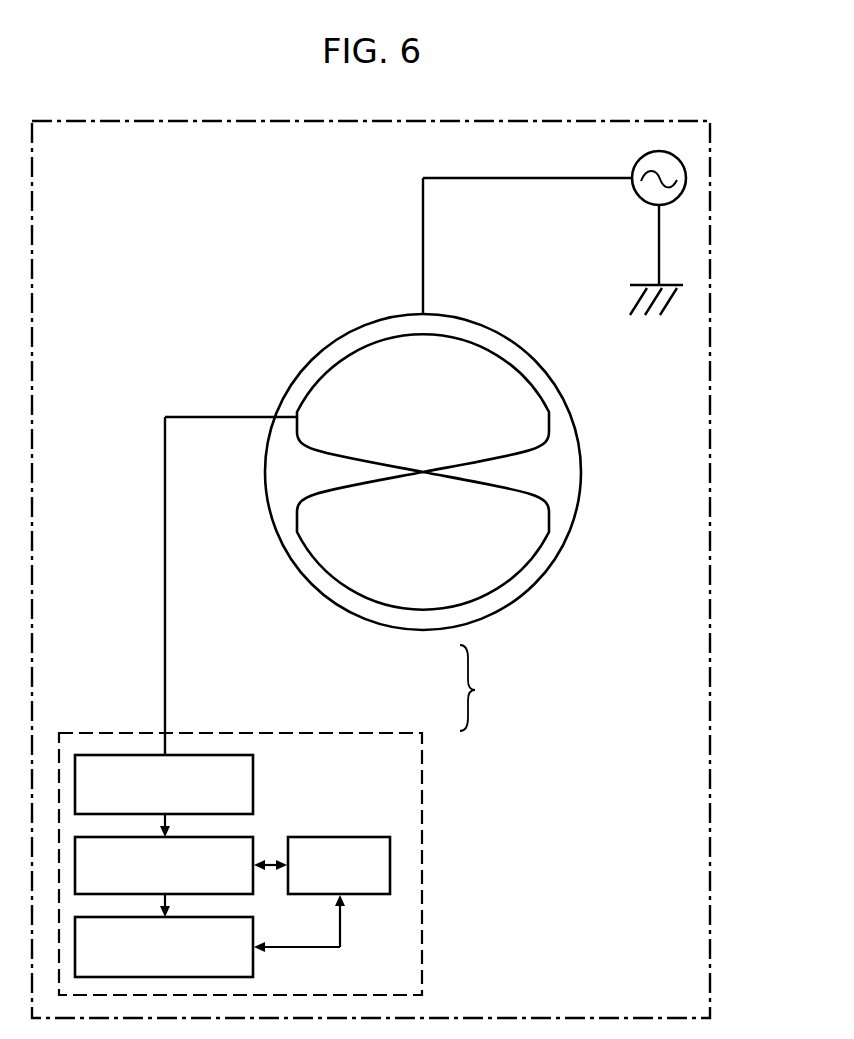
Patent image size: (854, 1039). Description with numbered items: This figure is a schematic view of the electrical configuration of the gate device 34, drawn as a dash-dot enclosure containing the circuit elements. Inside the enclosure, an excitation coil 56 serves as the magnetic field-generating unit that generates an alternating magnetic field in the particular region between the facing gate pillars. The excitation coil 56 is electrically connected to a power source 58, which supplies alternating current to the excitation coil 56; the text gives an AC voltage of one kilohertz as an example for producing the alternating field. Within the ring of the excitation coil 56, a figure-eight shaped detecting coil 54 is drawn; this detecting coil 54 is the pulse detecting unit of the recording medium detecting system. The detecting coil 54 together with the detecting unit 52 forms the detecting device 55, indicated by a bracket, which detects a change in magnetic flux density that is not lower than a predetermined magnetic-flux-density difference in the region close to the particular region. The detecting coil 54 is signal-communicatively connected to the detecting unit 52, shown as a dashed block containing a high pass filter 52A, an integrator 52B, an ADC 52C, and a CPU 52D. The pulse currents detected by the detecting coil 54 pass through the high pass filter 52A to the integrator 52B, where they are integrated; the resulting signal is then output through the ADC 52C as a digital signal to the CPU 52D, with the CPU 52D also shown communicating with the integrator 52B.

The gate device 34 is at (619, 118).
The power source 58 is at (686, 172).
The excitation coil 56 is at (482, 328).
The detecting coil 54 is at (390, 608).
The detecting device 55 is at (484, 688).
The detecting unit 52 is at (357, 727).
The high pass filter 52A is at (253, 762).
The integrator 52B is at (253, 843).
The ADC 52C is at (253, 970).
The CPU 52D is at (370, 895).